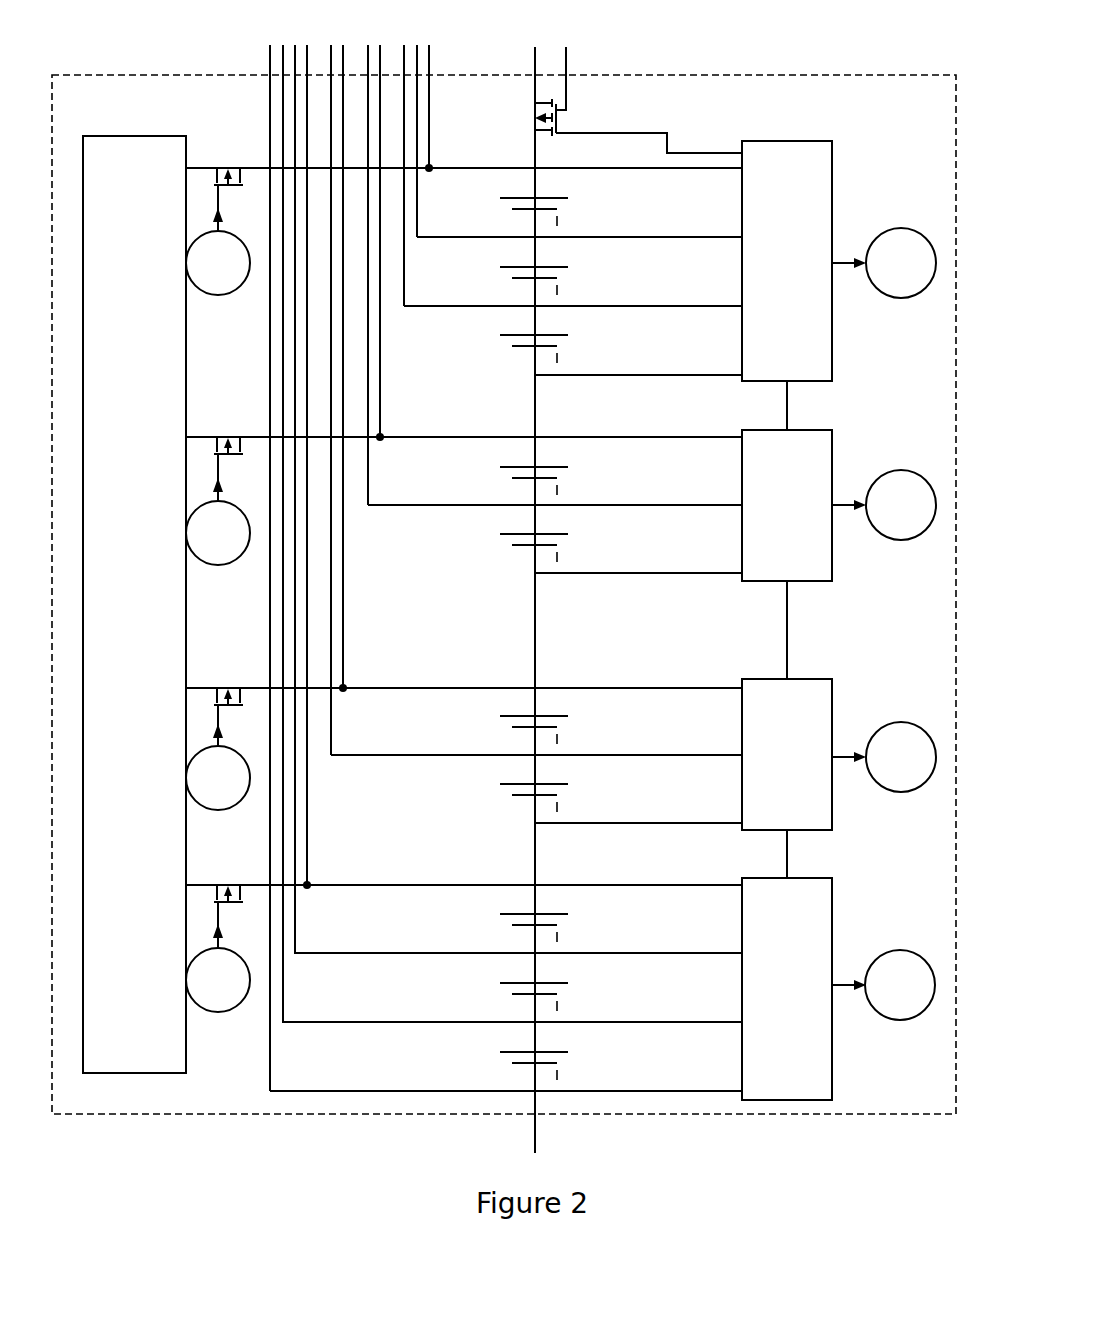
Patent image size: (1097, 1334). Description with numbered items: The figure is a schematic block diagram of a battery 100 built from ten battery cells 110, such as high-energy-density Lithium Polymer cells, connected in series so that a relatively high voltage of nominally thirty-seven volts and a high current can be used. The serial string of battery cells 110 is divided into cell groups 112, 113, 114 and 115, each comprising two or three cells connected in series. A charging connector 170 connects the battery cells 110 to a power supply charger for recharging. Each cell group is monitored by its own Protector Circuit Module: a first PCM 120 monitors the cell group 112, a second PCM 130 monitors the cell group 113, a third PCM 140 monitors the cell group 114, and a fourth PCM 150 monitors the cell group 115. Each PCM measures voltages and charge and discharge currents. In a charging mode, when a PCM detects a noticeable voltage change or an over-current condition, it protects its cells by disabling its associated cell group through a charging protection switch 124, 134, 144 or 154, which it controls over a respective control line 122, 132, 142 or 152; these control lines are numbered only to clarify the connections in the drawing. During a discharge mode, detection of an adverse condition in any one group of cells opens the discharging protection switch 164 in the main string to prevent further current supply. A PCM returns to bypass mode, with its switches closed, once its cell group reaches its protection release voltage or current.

The battery 100 is at (676, 74).
The battery cells 110 is at (514, 661).
The cell group 112 is at (554, 400).
The cell group 113 is at (554, 600).
The cell group 114 is at (554, 850).
The cell group 115 is at (554, 1118).
The Protector Circuit Module 120 is at (832, 155).
The control line 122 is at (561, 241).
The charging protection switch 124 is at (213, 168).
The Protector Circuit Module 130 is at (832, 445).
The control line 132 is at (561, 509).
The charging protection switch 134 is at (213, 437).
The Protector Circuit Module 140 is at (832, 697).
The control line 142 is at (561, 757).
The charging protection switch 144 is at (213, 688).
The Protector Circuit Module 150 is at (832, 890).
The control line 152 is at (560, 961).
The charging protection switch 154 is at (213, 885).
The discharging protection switch 164 is at (533, 118).
The charging connector 170 is at (97, 136).